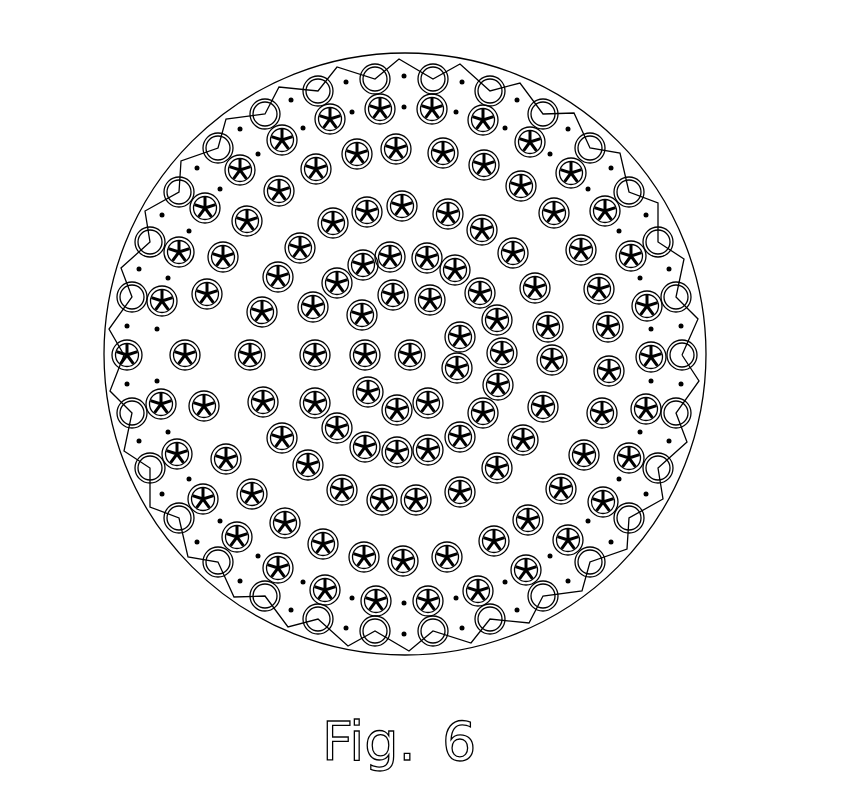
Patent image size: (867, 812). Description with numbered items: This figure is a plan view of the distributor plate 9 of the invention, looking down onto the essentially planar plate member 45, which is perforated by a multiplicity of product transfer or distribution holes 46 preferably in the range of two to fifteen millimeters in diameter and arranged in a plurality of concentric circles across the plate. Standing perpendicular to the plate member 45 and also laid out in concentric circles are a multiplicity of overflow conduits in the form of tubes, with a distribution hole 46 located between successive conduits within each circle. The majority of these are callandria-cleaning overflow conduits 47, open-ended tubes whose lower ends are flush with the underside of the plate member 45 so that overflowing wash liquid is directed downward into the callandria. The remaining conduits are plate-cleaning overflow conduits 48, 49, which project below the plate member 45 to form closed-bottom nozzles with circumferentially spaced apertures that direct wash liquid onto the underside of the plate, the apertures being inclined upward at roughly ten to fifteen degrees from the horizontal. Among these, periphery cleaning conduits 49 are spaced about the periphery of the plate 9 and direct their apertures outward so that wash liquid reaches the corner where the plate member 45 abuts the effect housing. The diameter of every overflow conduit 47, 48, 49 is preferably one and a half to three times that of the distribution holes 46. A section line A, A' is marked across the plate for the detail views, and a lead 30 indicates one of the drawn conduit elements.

The distributor plate 9 is at (728, 168).
The cutting element 30 is at (446, 136).
The plate member 45 is at (706, 380).
The distribution holes 46 is at (243, 127).
The callandria-cleaning overflow conduits 47 is at (503, 120).
The plate-cleaning overflow conduits 48 is at (238, 350).
The periphery cleaning conduits 49 is at (174, 173).
The section line A is at (614, 156).
The section line A' is at (678, 279).